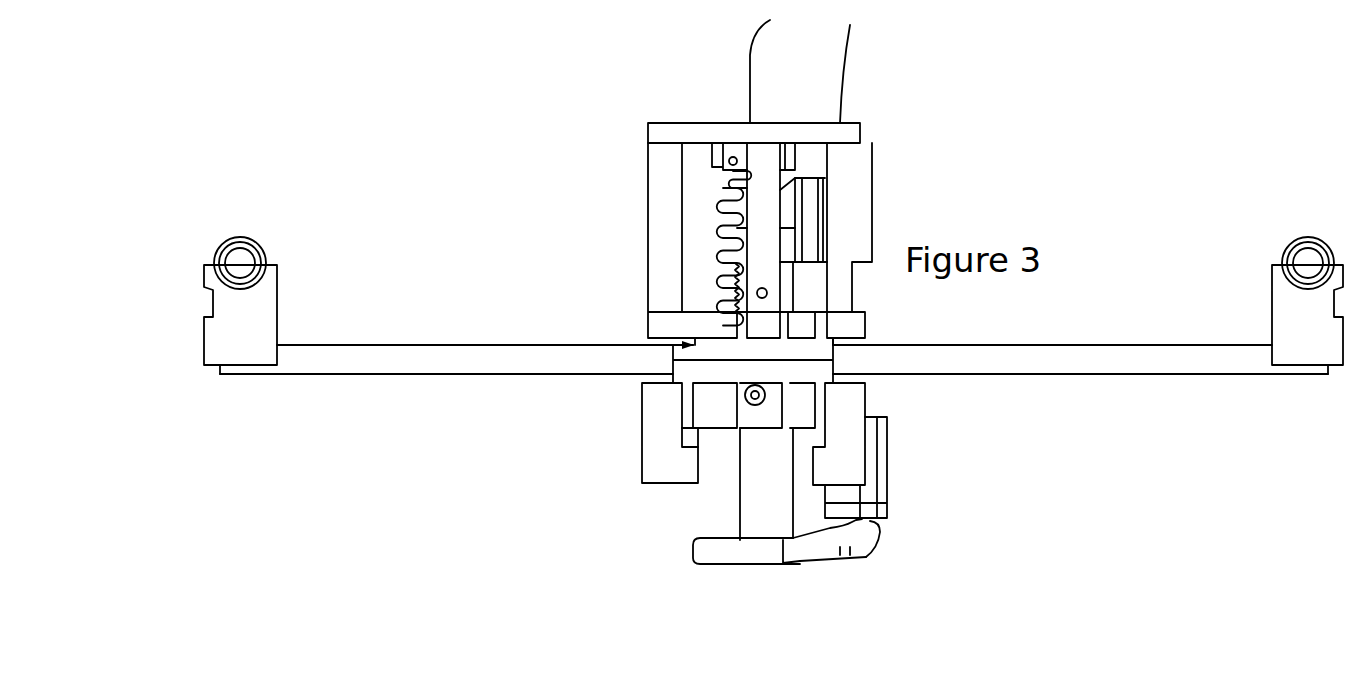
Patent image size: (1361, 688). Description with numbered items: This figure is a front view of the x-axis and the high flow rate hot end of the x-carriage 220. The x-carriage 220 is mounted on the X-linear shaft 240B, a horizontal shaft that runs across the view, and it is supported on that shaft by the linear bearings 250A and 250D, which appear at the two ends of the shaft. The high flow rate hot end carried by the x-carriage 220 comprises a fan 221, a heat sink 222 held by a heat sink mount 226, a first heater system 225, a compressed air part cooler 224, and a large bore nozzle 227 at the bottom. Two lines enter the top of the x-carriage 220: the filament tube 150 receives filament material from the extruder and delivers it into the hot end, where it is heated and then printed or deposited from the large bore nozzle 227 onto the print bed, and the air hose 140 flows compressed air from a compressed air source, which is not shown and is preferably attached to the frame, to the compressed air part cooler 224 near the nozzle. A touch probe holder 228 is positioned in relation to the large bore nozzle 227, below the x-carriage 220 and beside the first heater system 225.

The x-carriage 220 is at (648, 123).
The fan 221 is at (829, 174).
The heat sink 222 is at (722, 205).
The compressed air part cooler 224 is at (868, 556).
The first heater system 225 is at (738, 488).
The heat sink mount 226 is at (718, 170).
The large bore nozzle 227 is at (752, 568).
The touch probe holder 228 is at (723, 430).
The X-linear shaft 240B is at (378, 376).
The linear bearing 250A is at (240, 238).
The linear bearing 250D is at (1304, 239).
The filament tube 150 is at (745, 83).
The air hose 140 is at (854, 58).